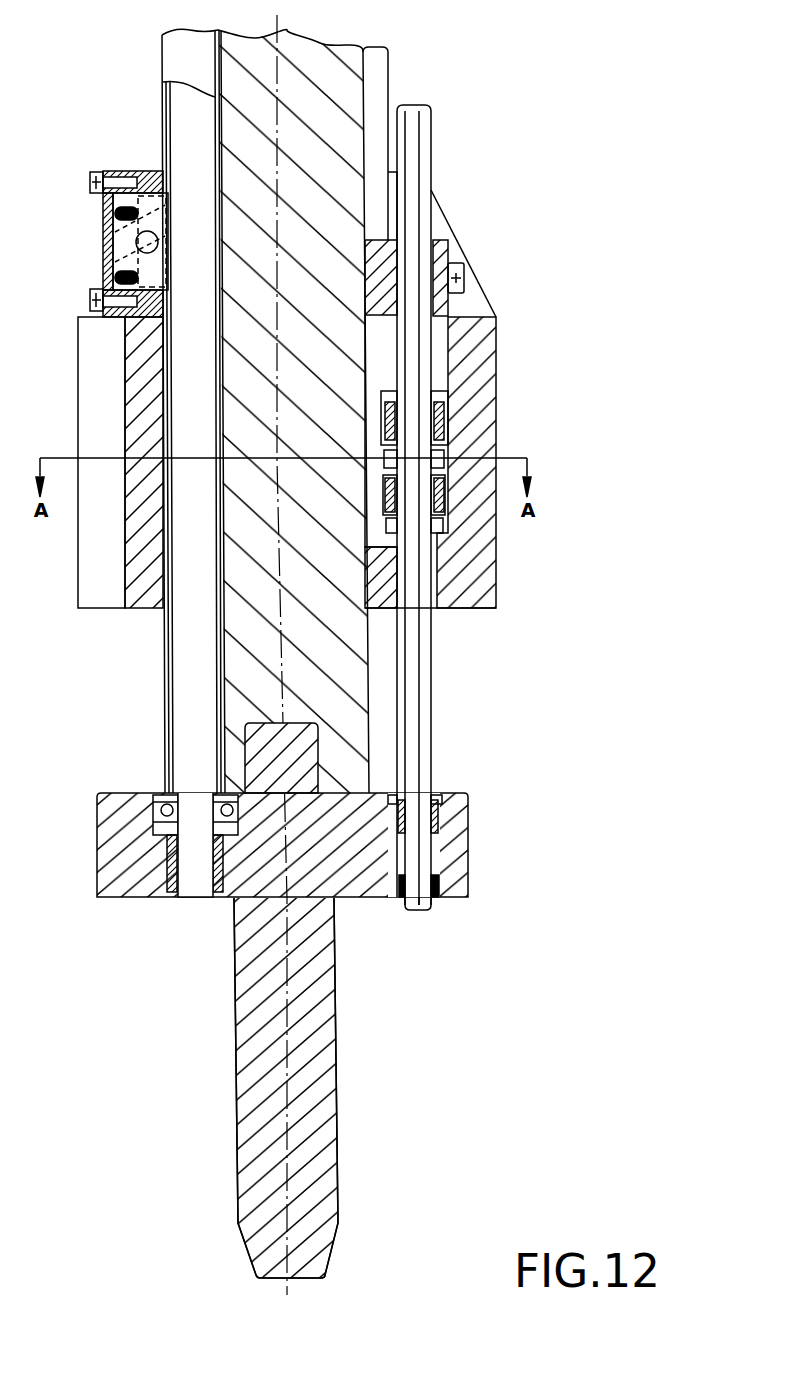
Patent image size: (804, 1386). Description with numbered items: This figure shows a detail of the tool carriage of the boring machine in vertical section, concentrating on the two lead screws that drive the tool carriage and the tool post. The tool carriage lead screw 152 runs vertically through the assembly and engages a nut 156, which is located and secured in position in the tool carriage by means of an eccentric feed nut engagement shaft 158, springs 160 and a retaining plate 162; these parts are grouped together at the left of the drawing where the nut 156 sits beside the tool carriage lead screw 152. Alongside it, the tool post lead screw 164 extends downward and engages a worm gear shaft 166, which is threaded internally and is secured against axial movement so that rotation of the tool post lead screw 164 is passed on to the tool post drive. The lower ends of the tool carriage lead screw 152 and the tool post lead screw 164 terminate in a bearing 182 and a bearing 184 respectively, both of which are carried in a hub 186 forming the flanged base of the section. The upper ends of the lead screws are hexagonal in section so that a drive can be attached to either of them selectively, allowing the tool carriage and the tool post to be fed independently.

The tool carriage lead screw 152 is at (177, 148).
The nut 156 is at (90, 265).
The eccentric feed nut engagement shaft 158 is at (155, 172).
The springs 160 is at (97, 209).
The retaining plate 162 is at (108, 234).
The tool post lead screw 164 is at (413, 142).
The worm gear shaft 166 is at (447, 460).
The bearing 182 is at (155, 898).
The bearing 184 is at (447, 900).
The hub 186 is at (437, 793).